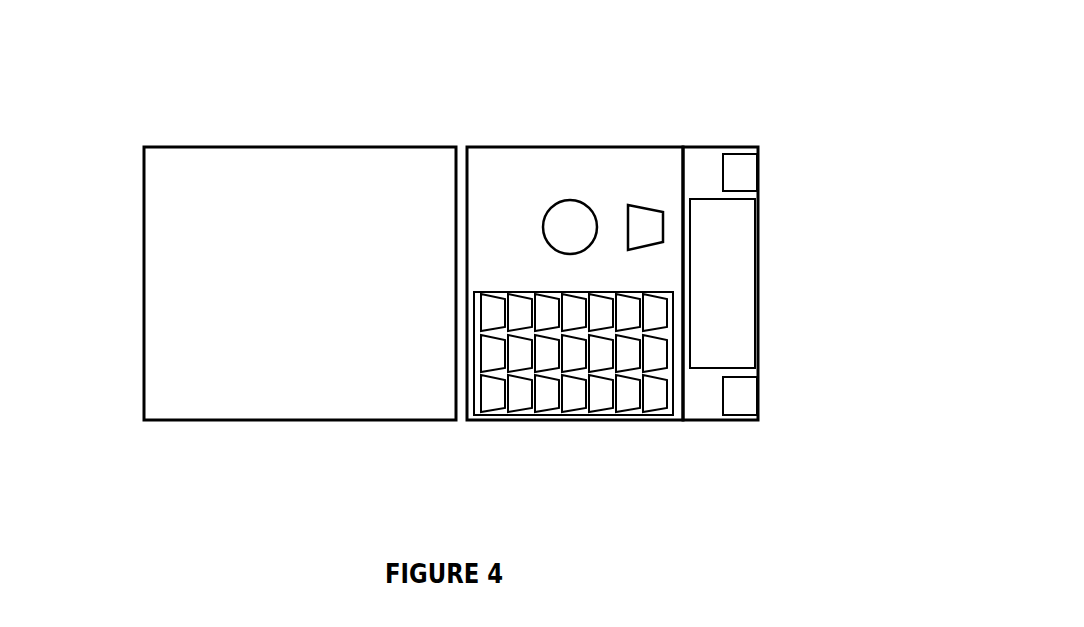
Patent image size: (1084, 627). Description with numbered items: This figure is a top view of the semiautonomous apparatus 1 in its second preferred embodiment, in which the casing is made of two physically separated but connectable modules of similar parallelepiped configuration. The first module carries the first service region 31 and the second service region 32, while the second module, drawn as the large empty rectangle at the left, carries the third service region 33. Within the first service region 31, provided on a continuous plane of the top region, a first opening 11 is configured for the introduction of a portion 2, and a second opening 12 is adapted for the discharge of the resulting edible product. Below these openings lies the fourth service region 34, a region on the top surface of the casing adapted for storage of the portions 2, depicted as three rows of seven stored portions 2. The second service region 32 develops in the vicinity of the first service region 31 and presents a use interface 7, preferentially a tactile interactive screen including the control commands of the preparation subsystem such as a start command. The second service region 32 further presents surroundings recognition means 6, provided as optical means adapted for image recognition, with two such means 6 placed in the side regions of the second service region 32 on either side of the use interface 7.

The semiautonomous apparatus 1 is at (429, 213).
The portion 2 is at (571, 339).
The surroundings recognition means 6 is at (758, 284).
The use interface 7 is at (722, 283).
The first opening 11 is at (640, 213).
The second opening 12 is at (570, 215).
The first service region 31 is at (575, 266).
The second service region 32 is at (720, 266).
The third service region 33 is at (300, 266).
The fourth service region 34 is at (573, 340).